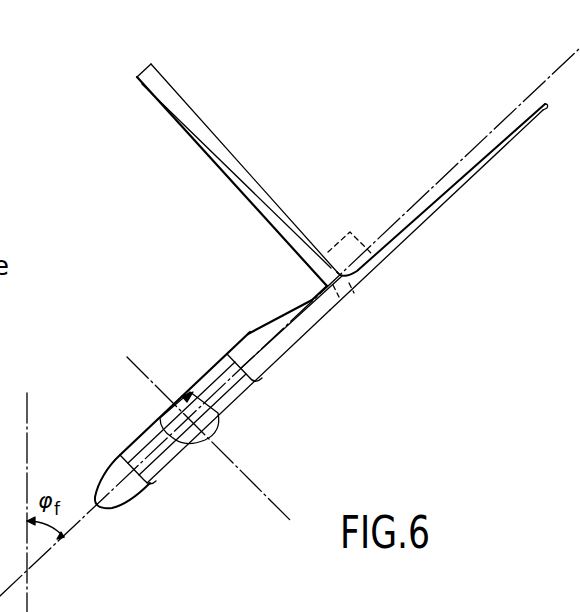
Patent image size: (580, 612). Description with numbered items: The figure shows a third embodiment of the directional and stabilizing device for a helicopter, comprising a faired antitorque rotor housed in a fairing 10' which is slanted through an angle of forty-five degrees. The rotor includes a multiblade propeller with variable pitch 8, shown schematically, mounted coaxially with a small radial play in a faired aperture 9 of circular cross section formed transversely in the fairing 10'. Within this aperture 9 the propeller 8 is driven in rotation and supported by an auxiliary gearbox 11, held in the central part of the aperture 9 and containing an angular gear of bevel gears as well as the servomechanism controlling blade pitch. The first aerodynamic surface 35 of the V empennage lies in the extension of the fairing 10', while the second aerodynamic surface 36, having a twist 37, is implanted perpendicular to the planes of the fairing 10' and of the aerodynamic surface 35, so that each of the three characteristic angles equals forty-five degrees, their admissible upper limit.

The multiblade propeller with variable pitch 8 is at (152, 435).
The faired aperture 9 is at (230, 395).
The fairing 10' is at (284, 283).
The auxiliary gearbox 11 is at (192, 432).
The first aerodynamic surface 35 is at (440, 202).
The second aerodynamic surface 36 is at (270, 210).
The twist 37 is at (175, 102).